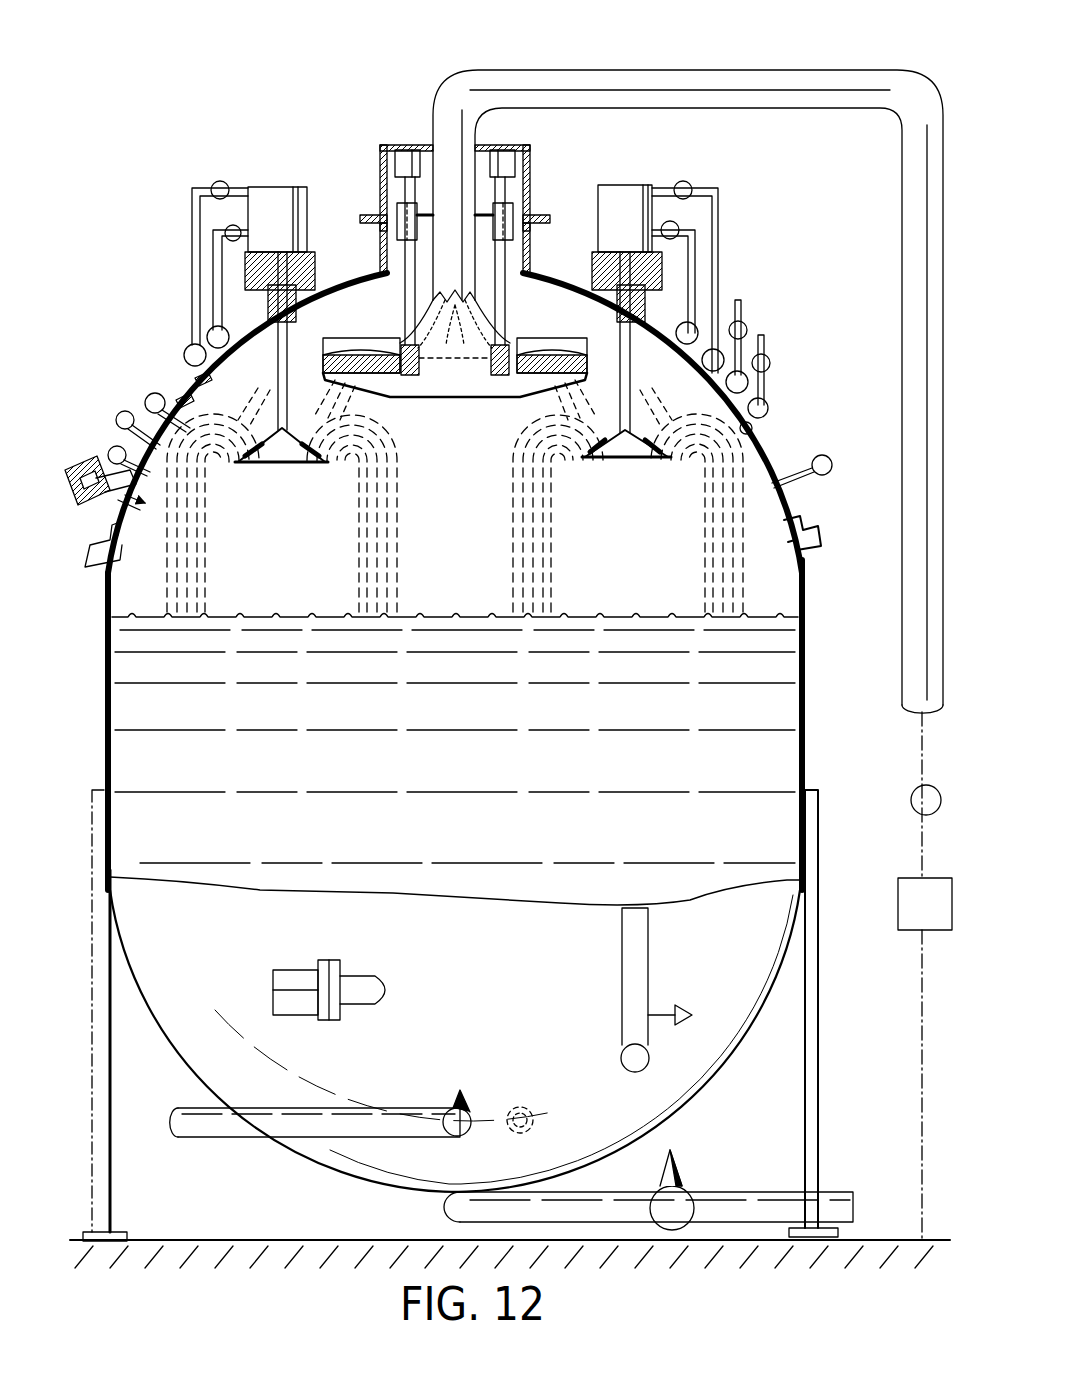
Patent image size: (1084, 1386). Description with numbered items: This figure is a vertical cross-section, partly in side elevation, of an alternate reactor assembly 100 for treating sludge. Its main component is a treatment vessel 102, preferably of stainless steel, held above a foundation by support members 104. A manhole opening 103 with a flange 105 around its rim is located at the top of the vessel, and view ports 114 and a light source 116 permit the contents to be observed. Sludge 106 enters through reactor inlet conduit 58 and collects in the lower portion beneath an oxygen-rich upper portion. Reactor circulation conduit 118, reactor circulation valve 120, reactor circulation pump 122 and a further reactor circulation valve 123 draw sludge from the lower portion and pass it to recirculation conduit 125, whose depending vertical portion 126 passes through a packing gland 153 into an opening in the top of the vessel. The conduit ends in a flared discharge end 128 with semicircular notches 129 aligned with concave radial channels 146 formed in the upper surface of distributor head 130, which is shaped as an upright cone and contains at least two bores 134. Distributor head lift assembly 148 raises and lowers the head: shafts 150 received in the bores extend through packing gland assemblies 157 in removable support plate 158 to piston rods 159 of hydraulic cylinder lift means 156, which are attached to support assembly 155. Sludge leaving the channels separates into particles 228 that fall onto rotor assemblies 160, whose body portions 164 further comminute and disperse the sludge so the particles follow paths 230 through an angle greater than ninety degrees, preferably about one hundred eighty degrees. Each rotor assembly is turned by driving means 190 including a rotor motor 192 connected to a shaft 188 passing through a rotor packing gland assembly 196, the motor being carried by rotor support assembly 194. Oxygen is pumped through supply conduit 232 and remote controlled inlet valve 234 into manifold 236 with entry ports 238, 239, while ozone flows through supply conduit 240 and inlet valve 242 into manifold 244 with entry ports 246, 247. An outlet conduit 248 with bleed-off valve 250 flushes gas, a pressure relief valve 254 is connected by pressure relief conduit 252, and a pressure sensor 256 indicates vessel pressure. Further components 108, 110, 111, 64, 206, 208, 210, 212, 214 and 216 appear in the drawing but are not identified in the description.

The reactor assembly 100 is at (600, 60).
The treatment vessel 102 is at (806, 578).
The manhole opening 103 is at (523, 262).
The support members 104 is at (112, 1083).
The flange 105 is at (545, 228).
The sludge 106 is at (362, 716).
The sensor probe 108 is at (292, 1015).
The outlet pipe 110 is at (622, 975).
The flow arrow 111 is at (665, 1000).
The view ports 114 is at (835, 502).
The light source 116 is at (120, 492).
The reactor circulation conduit 118 is at (588, 1205).
The reactor circulation valve 120 is at (690, 1200).
The reactor circulation pump 122 is at (900, 880).
The reactor circulation valve 123 is at (910, 805).
The recirculation conduit 125 is at (805, 98).
The depending vertical portion 126 is at (455, 165).
The flared discharge end 128 is at (433, 300).
The notches 129 is at (455, 324).
The distributor head 130 is at (455, 400).
The bores 134 is at (455, 355).
The concave radial channels 146 is at (390, 345).
The distributor head lift assembly 148 is at (330, 178).
The shaft 150 is at (405, 268).
The packing gland 153 is at (425, 213).
The support assembly 155 is at (410, 147).
The hydraulic cylinder lift means 156 is at (400, 163).
The packing gland assemblies 157 is at (400, 228).
The removable support plate 158 is at (372, 216).
The piston rod 159 is at (508, 200).
The rotor assembly 160 is at (288, 458).
The body portion 164 is at (255, 464).
The shaft 188 is at (201, 361).
The driving means 190 is at (218, 180).
The rotor motor 192 is at (628, 195).
The rotor support assembly 194 is at (660, 275).
The rotor packing gland assembly 196 is at (272, 300).
The valve 206 is at (700, 300).
The pipe 208 is at (690, 285).
The valve 210 is at (680, 228).
The pipe 212 is at (718, 235).
The valve 214 is at (692, 188).
The valve 216 is at (700, 360).
The sludge particles 228 is at (305, 388).
The particle path 230 is at (210, 540).
The O2 supply conduit 232 is at (764, 345).
The O2 inlet valve 234 is at (770, 363).
The O2 manifold 236 is at (768, 410).
The O2 entry port 238 is at (752, 430).
The O2 entry port 239 is at (204, 405).
The O3 supply conduit 240 is at (741, 310).
The O3 inlet valve 242 is at (747, 328).
The O3 manifold 244 is at (748, 385).
The O3 entry port 246 is at (725, 385).
The O3 entry port 247 is at (221, 384).
The outlet conduit 248 is at (150, 400).
The bleed-off valve 250 is at (153, 408).
The pressure relief conduit 252 is at (95, 420).
The pressure relief valve 254 is at (100, 450).
The pressure sensor 256 is at (838, 452).
The reactor inlet conduit 58 is at (510, 1115).
The pipe 64 is at (452, 1107).